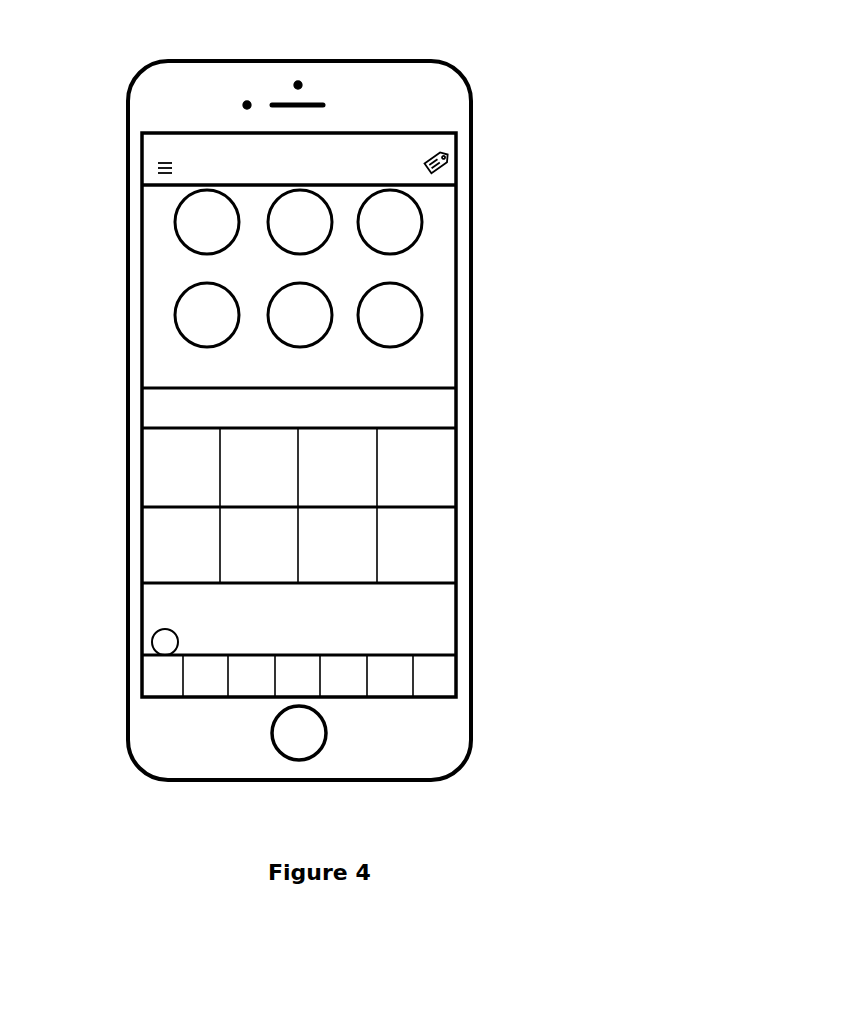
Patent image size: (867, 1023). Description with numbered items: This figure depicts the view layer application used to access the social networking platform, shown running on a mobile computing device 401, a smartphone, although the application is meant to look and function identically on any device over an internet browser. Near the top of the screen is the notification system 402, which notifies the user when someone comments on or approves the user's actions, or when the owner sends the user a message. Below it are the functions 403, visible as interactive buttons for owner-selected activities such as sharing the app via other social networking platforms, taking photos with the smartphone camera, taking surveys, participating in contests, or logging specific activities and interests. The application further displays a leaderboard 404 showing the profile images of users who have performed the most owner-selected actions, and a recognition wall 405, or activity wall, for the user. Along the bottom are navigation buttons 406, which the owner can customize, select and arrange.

The mobile computing device 401 is at (437, 82).
The notification system 402 is at (455, 155).
The functions 403 is at (195, 222).
The leaderboard 404 is at (437, 457).
The recognition wall 405 is at (160, 640).
The navigation buttons 406 is at (437, 675).